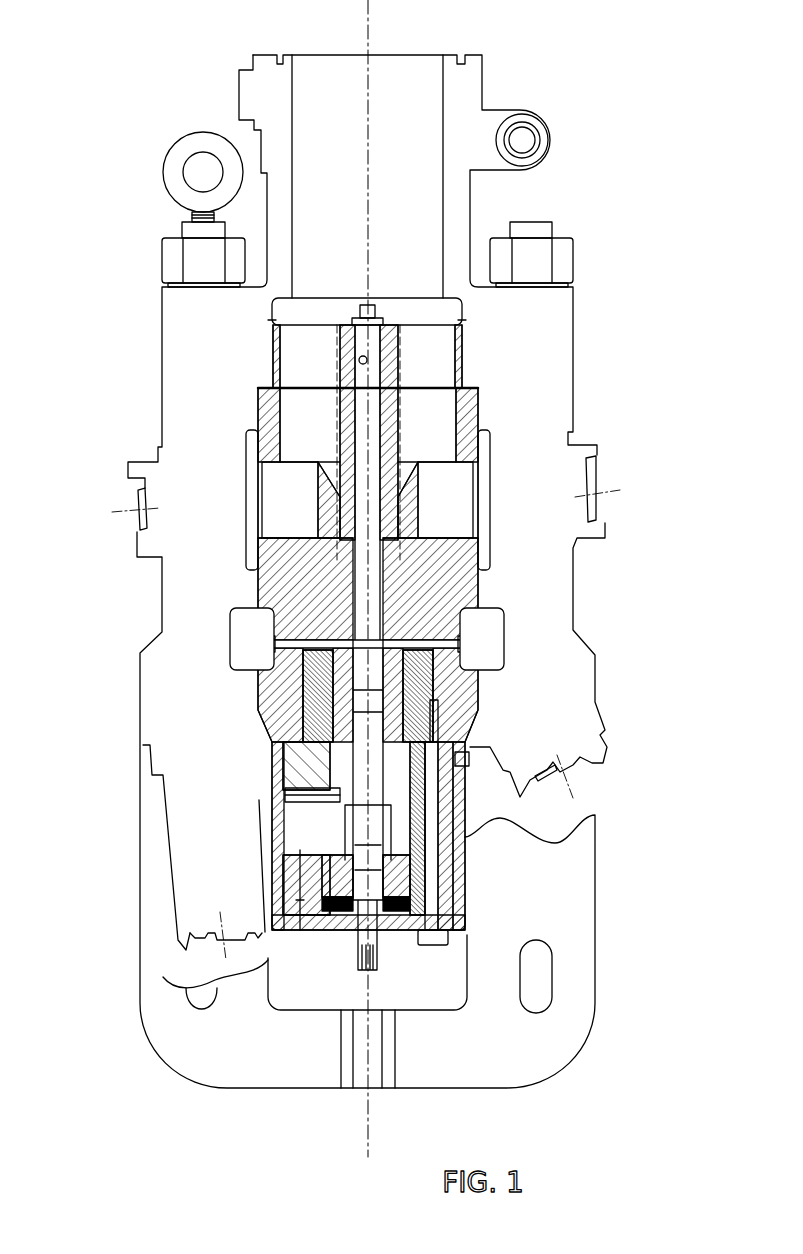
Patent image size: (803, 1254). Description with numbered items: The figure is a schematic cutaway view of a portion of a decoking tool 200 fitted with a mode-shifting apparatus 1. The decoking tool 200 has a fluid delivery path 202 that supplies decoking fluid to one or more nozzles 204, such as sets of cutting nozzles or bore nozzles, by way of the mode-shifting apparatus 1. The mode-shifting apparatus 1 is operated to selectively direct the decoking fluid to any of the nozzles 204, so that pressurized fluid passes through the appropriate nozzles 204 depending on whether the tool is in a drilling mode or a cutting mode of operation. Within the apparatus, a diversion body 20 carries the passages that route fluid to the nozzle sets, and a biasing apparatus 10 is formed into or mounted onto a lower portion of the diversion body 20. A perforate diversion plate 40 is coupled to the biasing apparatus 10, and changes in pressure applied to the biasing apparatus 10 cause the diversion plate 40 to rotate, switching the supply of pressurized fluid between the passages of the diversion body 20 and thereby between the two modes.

The mode-shifting apparatus 1 is at (352, 262).
The biasing apparatus 10 is at (490, 735).
The diversion body 20 is at (478, 592).
The diversion plate 40 is at (463, 352).
The decoking tool 200 is at (575, 318).
The fluid delivery path 202 is at (380, 131).
The nozzles 204 is at (130, 485).